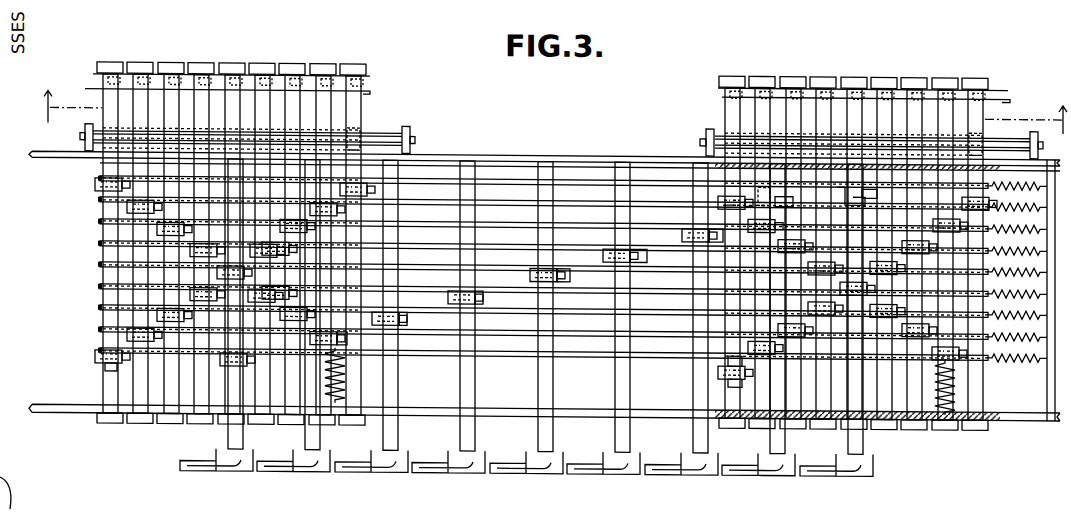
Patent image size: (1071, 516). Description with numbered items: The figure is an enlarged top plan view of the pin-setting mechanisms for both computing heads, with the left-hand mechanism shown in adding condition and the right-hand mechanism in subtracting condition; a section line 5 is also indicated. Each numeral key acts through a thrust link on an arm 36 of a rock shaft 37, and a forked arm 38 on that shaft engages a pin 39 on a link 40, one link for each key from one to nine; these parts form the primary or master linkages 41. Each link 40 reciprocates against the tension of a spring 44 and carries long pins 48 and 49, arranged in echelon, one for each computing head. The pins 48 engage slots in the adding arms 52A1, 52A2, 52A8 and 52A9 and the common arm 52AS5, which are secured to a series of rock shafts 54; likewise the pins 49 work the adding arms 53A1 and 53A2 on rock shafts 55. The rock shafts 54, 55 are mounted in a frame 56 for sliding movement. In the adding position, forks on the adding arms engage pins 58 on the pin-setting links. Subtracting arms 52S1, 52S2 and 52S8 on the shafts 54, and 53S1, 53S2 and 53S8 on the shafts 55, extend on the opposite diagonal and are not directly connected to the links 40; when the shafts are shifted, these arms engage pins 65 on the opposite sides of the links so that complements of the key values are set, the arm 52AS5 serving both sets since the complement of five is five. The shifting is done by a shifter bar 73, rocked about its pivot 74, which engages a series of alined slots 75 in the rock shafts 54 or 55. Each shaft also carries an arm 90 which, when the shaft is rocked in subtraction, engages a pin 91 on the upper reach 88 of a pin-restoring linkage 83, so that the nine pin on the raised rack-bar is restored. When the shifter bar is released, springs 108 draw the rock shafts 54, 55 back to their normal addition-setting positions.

The section line 5 is at (555, 111).
The arm 36 is at (407, 450).
The rock shaft 37 is at (460, 388).
The forked arm 38 is at (536, 269).
The pin 39 is at (407, 316).
The link 40 is at (511, 354).
The primary or master linkages 41 is at (567, 331).
The spring 44 is at (1010, 342).
The long pin 48 is at (110, 368).
The long pin 49 is at (718, 366).
The rock shaft 54 is at (107, 83).
The rock shaft 55 is at (730, 102).
The frame 56 is at (568, 158).
The pin 58 is at (107, 368).
The pin 65 is at (130, 206).
The shifter bar 73 is at (375, 135).
The pivot 74 is at (414, 136).
The alined slots 75 is at (355, 126).
The pin-restoring linkage 83 is at (368, 83).
The upper reach 88 is at (368, 90).
The arm 90 is at (135, 62).
The pin 91 is at (206, 80).
The spring 108 is at (336, 400).
The subtracting arm 52S1 is at (101, 190).
The subtracting arm 52S2 is at (156, 231).
The adding and subtracting arm 52AS5 is at (217, 274).
The adding arm 52A2 is at (127, 334).
The adding arm 52A1 is at (95, 357).
The adding arm 52A9 is at (375, 186).
The adding arm 52A8 is at (345, 207).
The subtracting arm 52S8 is at (347, 334).
The subtracting arm 53S1 is at (718, 198).
The subtracting arm 53S2 is at (748, 218).
The subtracting arm 53S8 is at (960, 345).
The adding arm 53A2 is at (748, 345).
The adding arm 53A1 is at (728, 378).